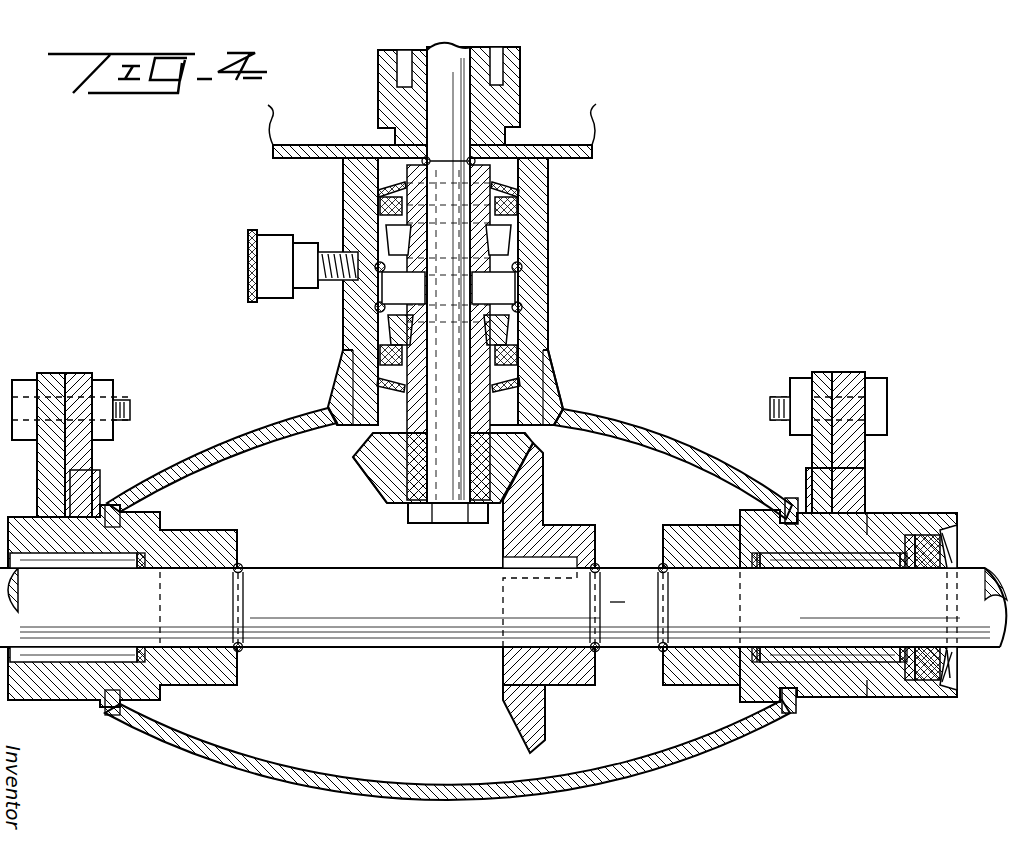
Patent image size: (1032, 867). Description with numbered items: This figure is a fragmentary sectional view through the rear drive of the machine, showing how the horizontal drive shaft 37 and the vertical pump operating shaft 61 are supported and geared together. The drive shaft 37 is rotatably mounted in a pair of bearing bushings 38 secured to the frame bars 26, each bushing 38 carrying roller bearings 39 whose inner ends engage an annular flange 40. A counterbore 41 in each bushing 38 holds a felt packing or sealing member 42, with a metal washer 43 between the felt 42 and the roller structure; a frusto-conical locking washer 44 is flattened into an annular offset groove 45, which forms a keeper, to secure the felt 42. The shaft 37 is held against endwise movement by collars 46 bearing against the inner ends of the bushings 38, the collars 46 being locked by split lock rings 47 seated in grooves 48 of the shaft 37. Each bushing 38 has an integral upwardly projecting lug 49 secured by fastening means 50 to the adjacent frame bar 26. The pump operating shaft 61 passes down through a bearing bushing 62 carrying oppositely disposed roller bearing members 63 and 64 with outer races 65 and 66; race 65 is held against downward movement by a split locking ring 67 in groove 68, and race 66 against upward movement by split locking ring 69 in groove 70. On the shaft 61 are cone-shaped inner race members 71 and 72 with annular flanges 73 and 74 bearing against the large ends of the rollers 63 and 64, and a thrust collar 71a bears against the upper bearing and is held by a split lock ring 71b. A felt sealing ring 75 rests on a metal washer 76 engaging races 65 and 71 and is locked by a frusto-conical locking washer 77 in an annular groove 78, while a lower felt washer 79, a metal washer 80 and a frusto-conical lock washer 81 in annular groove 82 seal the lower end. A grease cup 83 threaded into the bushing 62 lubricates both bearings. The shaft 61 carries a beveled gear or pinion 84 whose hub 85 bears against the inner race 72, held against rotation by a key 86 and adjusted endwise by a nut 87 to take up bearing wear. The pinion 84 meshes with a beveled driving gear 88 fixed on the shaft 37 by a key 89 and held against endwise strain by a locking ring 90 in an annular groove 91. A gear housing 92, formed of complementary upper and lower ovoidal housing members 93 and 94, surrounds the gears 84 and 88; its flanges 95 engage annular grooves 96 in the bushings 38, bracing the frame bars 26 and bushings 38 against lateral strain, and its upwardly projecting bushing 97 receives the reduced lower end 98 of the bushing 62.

The frame bars 26 is at (822, 372).
The drive shaft 37 is at (357, 628).
The bearing bushings 38 is at (885, 513).
The roller bearings 39 is at (852, 565).
The annular flange 40 is at (756, 650).
The counterbore 41 is at (928, 515).
The felt packing or sealing member 42 is at (945, 540).
The metal washer 43 is at (900, 700).
The frusto-conical locking washer 44 is at (959, 665).
The annular offset groove 45 is at (932, 682).
The collars 46 is at (697, 527).
The split lock rings 47 is at (662, 563).
The grooves 48 is at (662, 600).
The lug 49 is at (868, 452).
The fastening means 50 is at (887, 397).
The pump operating shaft 61 is at (440, 88).
The bearing bushing 62 is at (540, 236).
The roller bearing member 63 is at (345, 227).
The roller bearing member 64 is at (345, 337).
The outer race 65 is at (513, 230).
The outer race 66 is at (546, 306).
The split locking ring 67 is at (524, 264).
The groove 68 is at (523, 262).
The split locking ring 69 is at (400, 308).
The groove 70 is at (352, 306).
The inner race member 71 is at (519, 280).
The thrust collar 71a is at (482, 175).
The upper bushing 71b is at (478, 158).
The inner race member 72 is at (493, 288).
The annular flange 73 is at (548, 190).
The annular flange 74 is at (520, 331).
The felt sealing ring 75 is at (516, 210).
The metal washer 76 is at (382, 207).
The frusto-conical locking washer 77 is at (393, 186).
The annular groove 78 is at (376, 192).
The lower felt washer 79 is at (558, 372).
The metal washer 80 is at (556, 349).
The frusto-conical lock washer 81 is at (530, 428).
The annular groove 82 is at (562, 404).
The grease cup 83 is at (270, 293).
The beveled gear or pinion 84 is at (372, 482).
The hub 85 is at (368, 446).
The key 86 is at (388, 506).
The nut 87 is at (422, 523).
The beveled driving gear 88 is at (512, 675).
The key 89 is at (557, 562).
The locking ring 90 is at (600, 653).
The annular groove 91 is at (590, 605).
The gear housing 92 is at (663, 420).
The upper housing member 93 is at (222, 440).
The lower housing member 94 is at (254, 768).
The flanges 95 is at (788, 500).
The annular grooves 96 is at (790, 710).
The upwardly projecting bushing 97 is at (329, 405).
The reduced lower end 98 is at (340, 362).